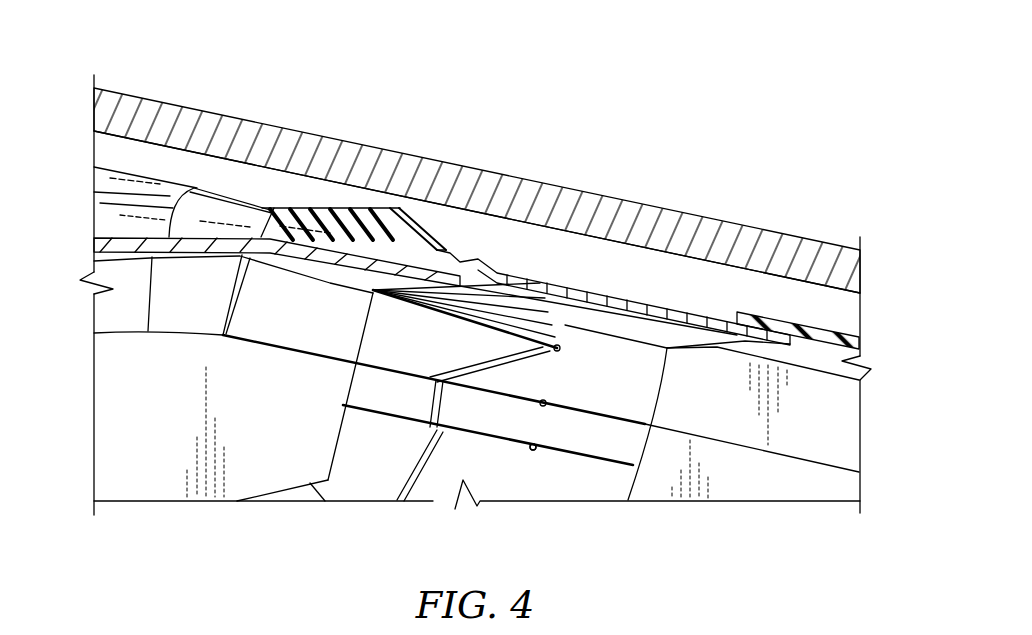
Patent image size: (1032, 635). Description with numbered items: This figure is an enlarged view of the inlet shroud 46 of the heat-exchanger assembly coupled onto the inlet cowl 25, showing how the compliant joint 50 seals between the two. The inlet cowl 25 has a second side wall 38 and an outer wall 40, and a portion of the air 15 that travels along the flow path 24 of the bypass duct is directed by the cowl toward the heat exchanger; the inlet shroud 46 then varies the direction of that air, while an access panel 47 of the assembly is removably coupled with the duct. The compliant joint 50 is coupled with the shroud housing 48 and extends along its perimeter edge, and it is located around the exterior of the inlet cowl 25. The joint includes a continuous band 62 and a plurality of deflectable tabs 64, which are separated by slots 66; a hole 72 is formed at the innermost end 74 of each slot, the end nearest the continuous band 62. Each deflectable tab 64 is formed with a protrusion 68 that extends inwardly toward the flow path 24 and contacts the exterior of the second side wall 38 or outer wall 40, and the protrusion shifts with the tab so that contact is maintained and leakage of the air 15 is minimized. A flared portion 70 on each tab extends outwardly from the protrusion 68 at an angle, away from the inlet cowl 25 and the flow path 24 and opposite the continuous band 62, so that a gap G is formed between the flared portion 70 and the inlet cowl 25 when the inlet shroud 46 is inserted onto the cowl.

The air 15 is at (150, 419).
The flow path 24 is at (74, 471).
The inlet cowl 25 is at (270, 253).
The second side wall 38 is at (277, 290).
The outer wall 40 is at (218, 230).
The inlet shroud 46 is at (793, 160).
The access panel 47 is at (537, 180).
The shroud housing 48 is at (878, 347).
The compliant joint 50 is at (541, 259).
The continuous band 62 is at (578, 366).
The deflectable tabs 64 is at (497, 348).
The slots 66 is at (473, 437).
The protrusion 68 is at (464, 243).
The flared portion 70 is at (406, 198).
The hole 72 is at (537, 447).
The innermost end 74 is at (531, 456).
The gap G is at (377, 290).